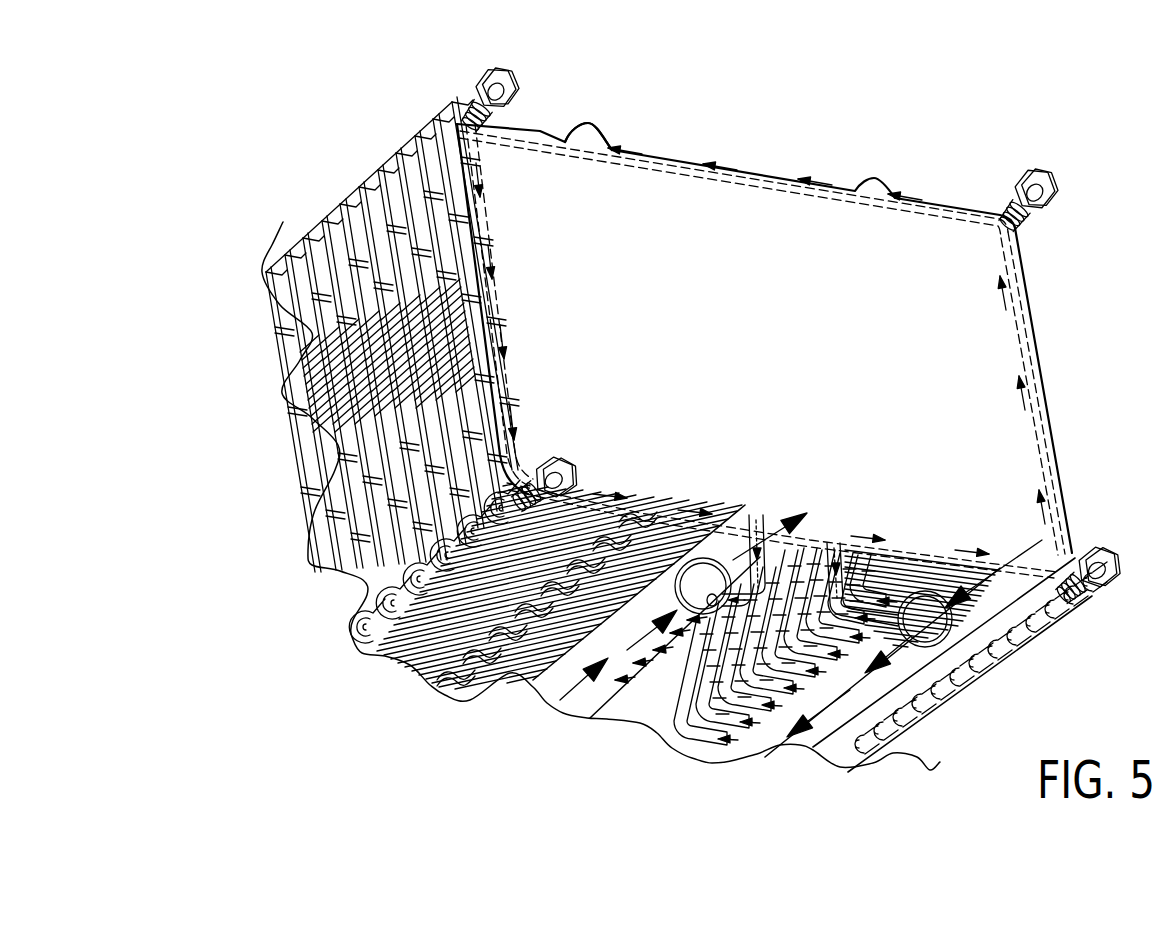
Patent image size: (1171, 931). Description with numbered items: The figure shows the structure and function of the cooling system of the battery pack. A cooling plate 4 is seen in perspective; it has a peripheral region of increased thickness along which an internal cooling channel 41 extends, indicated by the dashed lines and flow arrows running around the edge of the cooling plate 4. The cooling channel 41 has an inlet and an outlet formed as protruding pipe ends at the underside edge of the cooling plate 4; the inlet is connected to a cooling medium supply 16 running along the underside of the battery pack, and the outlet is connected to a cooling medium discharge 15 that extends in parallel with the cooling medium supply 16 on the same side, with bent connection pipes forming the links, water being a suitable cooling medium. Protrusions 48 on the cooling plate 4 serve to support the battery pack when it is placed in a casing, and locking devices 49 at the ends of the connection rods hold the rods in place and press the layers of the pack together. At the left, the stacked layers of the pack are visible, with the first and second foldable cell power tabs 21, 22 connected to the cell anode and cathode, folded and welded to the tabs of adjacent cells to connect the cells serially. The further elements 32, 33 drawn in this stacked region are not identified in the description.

The cooling plate 4 is at (712, 243).
The protrusions 48 is at (590, 133).
The locking devices 49 is at (1047, 178).
The internal cooling channel 41 is at (1043, 343).
The second foldable cell power tab 22 is at (352, 310).
The corrugated fin 33 is at (318, 385).
The corrugated fin 32 is at (343, 457).
The first foldable cell power tab 21 is at (360, 503).
The cooling medium discharge 15 is at (555, 680).
The cooling medium supply 16 is at (927, 705).